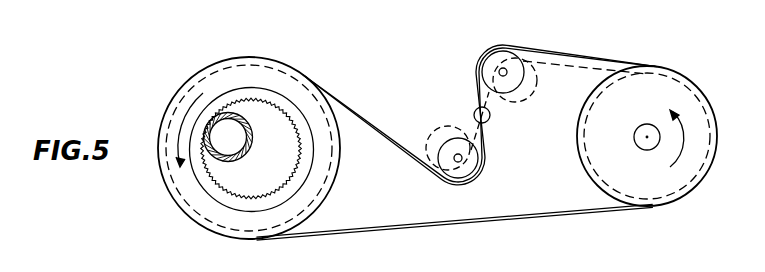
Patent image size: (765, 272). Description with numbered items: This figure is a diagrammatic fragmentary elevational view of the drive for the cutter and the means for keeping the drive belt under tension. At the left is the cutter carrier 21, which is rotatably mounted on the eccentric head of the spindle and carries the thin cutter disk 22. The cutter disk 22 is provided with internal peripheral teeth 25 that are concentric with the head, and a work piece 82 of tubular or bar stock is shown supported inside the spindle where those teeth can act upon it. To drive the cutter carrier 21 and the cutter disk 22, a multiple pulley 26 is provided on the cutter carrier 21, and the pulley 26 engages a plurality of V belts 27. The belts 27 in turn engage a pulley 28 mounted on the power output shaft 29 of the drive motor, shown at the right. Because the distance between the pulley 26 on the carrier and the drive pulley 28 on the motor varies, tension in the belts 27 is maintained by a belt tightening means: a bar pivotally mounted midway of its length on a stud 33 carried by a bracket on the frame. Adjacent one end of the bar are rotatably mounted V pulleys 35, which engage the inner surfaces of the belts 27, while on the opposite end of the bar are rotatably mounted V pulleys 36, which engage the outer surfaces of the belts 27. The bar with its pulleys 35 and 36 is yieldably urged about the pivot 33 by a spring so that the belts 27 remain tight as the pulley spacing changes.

The cutter carrier 21 is at (316, 170).
The cutter disk 22 is at (250, 96).
The internal peripheral teeth 25 is at (265, 195).
The multiple pulley 26 is at (340, 156).
The V belts 27 is at (421, 162).
The pulley 28 is at (578, 158).
The power output shaft 29 is at (646, 138).
The stud 33 is at (490, 117).
The V pulleys 35 is at (523, 78).
The V pulleys 36 is at (467, 137).
The work piece 82 is at (252, 140).